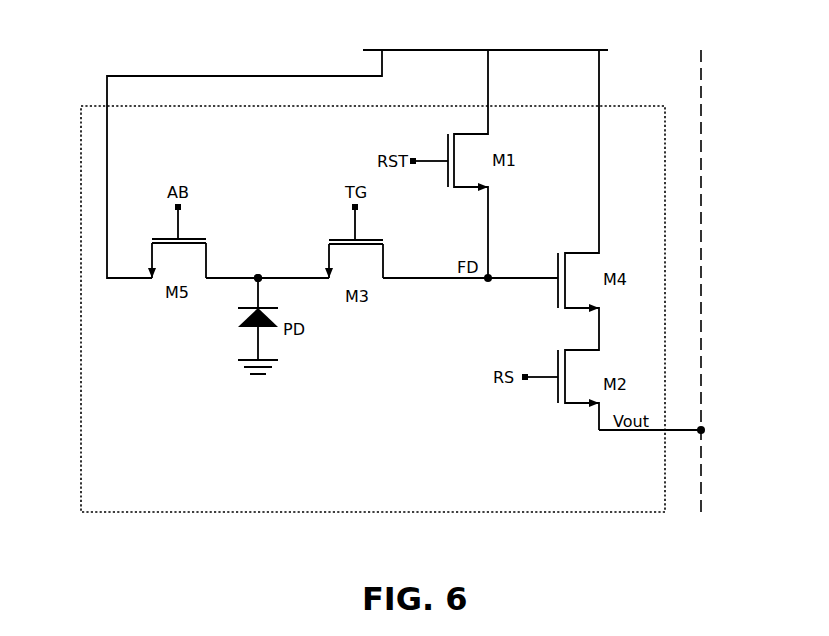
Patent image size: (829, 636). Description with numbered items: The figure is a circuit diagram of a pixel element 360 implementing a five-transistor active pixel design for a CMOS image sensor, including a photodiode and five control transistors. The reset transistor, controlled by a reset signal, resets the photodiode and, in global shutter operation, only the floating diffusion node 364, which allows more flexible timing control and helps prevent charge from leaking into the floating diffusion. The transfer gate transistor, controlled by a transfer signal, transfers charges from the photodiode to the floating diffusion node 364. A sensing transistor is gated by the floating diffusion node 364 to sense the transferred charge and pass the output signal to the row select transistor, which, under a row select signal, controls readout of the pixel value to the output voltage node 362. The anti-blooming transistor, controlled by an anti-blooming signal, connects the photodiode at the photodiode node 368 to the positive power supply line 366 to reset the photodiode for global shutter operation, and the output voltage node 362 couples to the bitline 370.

The pixel element 360 is at (80, 333).
The output voltage node 362 is at (603, 433).
The floating diffusion node 364 is at (490, 283).
The supply voltage line Vdd 366 is at (583, 50).
The photodiode node 368 is at (258, 270).
The bitline 370 is at (702, 123).